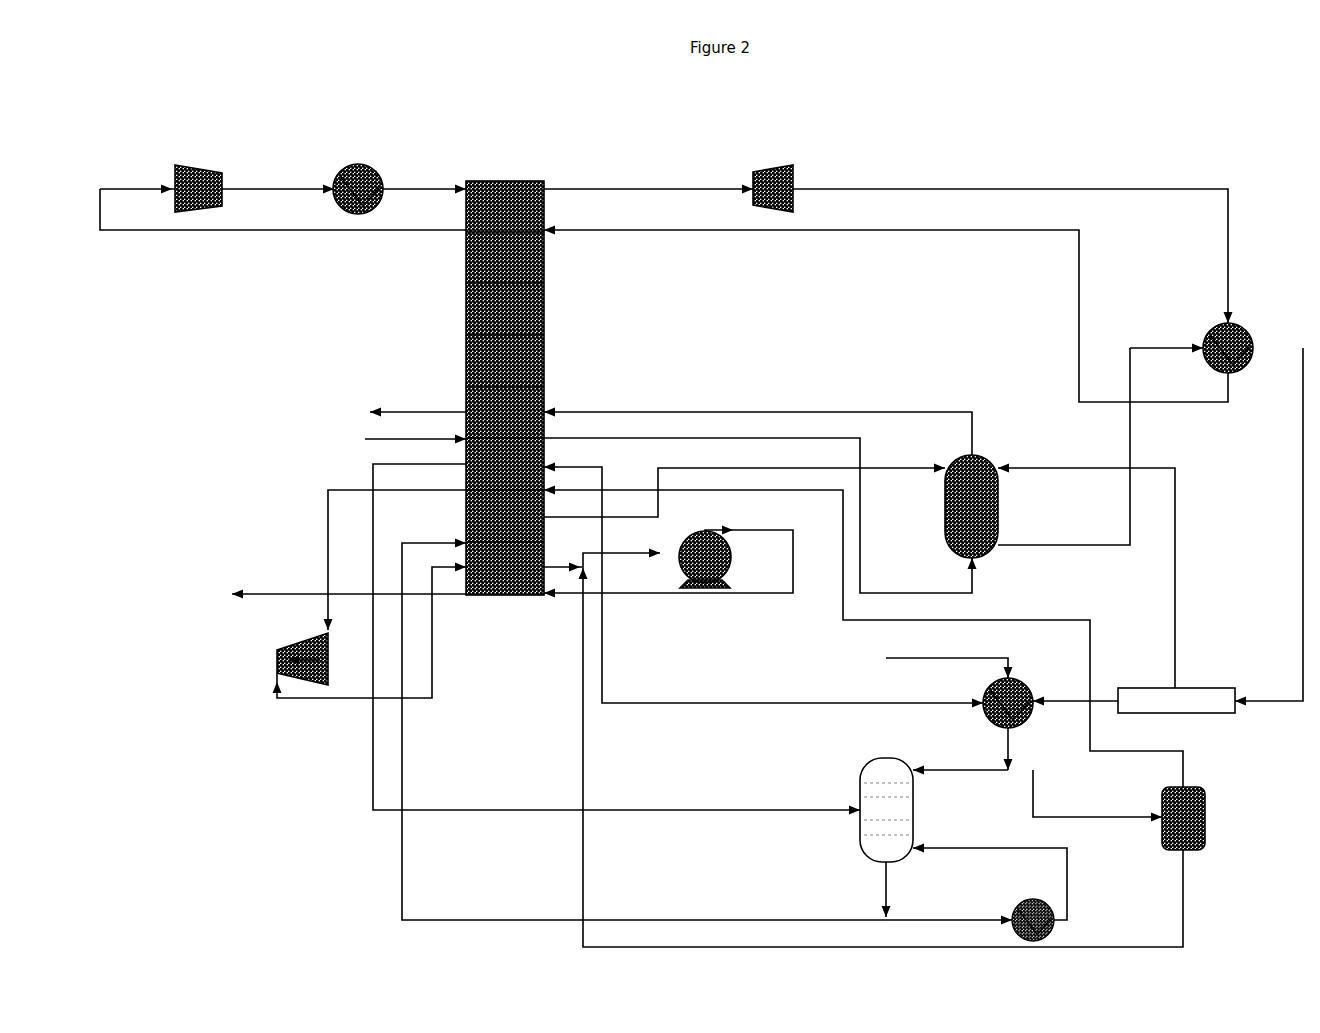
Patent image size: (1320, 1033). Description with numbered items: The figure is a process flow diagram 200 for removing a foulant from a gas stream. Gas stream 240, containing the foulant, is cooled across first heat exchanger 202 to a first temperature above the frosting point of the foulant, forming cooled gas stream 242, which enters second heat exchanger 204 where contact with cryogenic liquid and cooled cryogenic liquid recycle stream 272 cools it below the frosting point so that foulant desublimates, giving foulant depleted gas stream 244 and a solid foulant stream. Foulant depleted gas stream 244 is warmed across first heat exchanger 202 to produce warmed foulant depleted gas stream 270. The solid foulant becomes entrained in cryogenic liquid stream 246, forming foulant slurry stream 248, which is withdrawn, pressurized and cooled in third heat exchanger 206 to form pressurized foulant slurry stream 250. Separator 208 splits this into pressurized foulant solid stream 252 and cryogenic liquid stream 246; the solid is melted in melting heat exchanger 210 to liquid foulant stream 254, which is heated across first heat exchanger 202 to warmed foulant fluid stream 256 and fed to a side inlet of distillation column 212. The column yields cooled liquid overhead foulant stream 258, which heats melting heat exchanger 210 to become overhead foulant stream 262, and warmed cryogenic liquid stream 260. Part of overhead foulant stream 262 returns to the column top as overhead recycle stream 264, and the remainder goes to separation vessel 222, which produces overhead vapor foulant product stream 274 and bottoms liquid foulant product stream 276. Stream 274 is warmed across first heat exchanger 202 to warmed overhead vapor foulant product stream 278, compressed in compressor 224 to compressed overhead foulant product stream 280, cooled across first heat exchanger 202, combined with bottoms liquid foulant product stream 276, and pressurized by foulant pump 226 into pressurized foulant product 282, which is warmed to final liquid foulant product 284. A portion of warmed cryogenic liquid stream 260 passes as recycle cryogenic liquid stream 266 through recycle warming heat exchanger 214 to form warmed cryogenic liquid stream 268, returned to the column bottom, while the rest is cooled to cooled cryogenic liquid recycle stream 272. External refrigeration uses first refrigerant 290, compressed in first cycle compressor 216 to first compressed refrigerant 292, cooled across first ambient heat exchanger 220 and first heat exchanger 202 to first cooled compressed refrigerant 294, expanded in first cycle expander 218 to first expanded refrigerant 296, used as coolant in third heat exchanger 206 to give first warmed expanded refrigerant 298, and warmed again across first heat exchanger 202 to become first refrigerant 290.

The process flow diagram 200 is at (456, 110).
The first heat exchanger 202 is at (466, 355).
The second heat exchanger 204 is at (958, 460).
The third heat exchanger 206 is at (1208, 333).
The separator 208 is at (1172, 717).
The melting heat exchanger 210 is at (1024, 687).
The distillation column 212 is at (858, 768).
The recycle warming heat exchanger 214 is at (1022, 902).
The first cycle compressor 216 is at (176, 165).
The first cycle expander 218 is at (760, 172).
The first ambient heat exchanger 220 is at (338, 172).
The separation vessel 222 is at (1163, 790).
The compressor 224 is at (286, 648).
The foulant pump 226 is at (704, 531).
The gas stream 240 is at (399, 439).
The cooled gas stream 242 is at (760, 508).
The foulant depleted gas stream 244 is at (758, 425).
The cryogenic liquid stream 246 is at (1086, 568).
The foulant slurry stream 248 is at (1064, 446).
The pressurized foulant slurry stream 250 is at (1269, 527).
The pressurized foulant solid stream 252 is at (1075, 695).
The liquid foulant stream 254 is at (763, 585).
The warmed foulant fluid stream 256 is at (616, 639).
The cooled liquid overhead foulant stream 258 is at (949, 656).
The warmed cryogenic liquid stream 260 is at (646, 730).
The overhead foulant stream 262 is at (1083, 775).
The overhead recycle stream 264 is at (960, 761).
The recycle cryogenic liquid stream 266 is at (949, 911).
The warmed cryogenic liquid stream 268 is at (990, 874).
The warmed foulant depleted gas stream 270 is at (398, 411).
The cooled cryogenic liquid recycle stream 272 is at (744, 484).
The overhead vapor foulant product stream 274 is at (863, 637).
The bottoms liquid foulant product stream 276 is at (881, 748).
The warmed overhead vapor foulant product stream 278 is at (382, 560).
The compressed overhead foulant product stream 280 is at (370, 642).
The pressurized foulant product 282 is at (668, 562).
The final liquid foulant product 284 is at (333, 592).
The first refrigerant 290 is at (283, 209).
The first compressed refrigerant 292 is at (283, 181).
The first cooled compressed refrigerant 294 is at (648, 182).
The first expanded refrigerant 296 is at (1013, 240).
The first warmed expanded refrigerant 298 is at (886, 305).